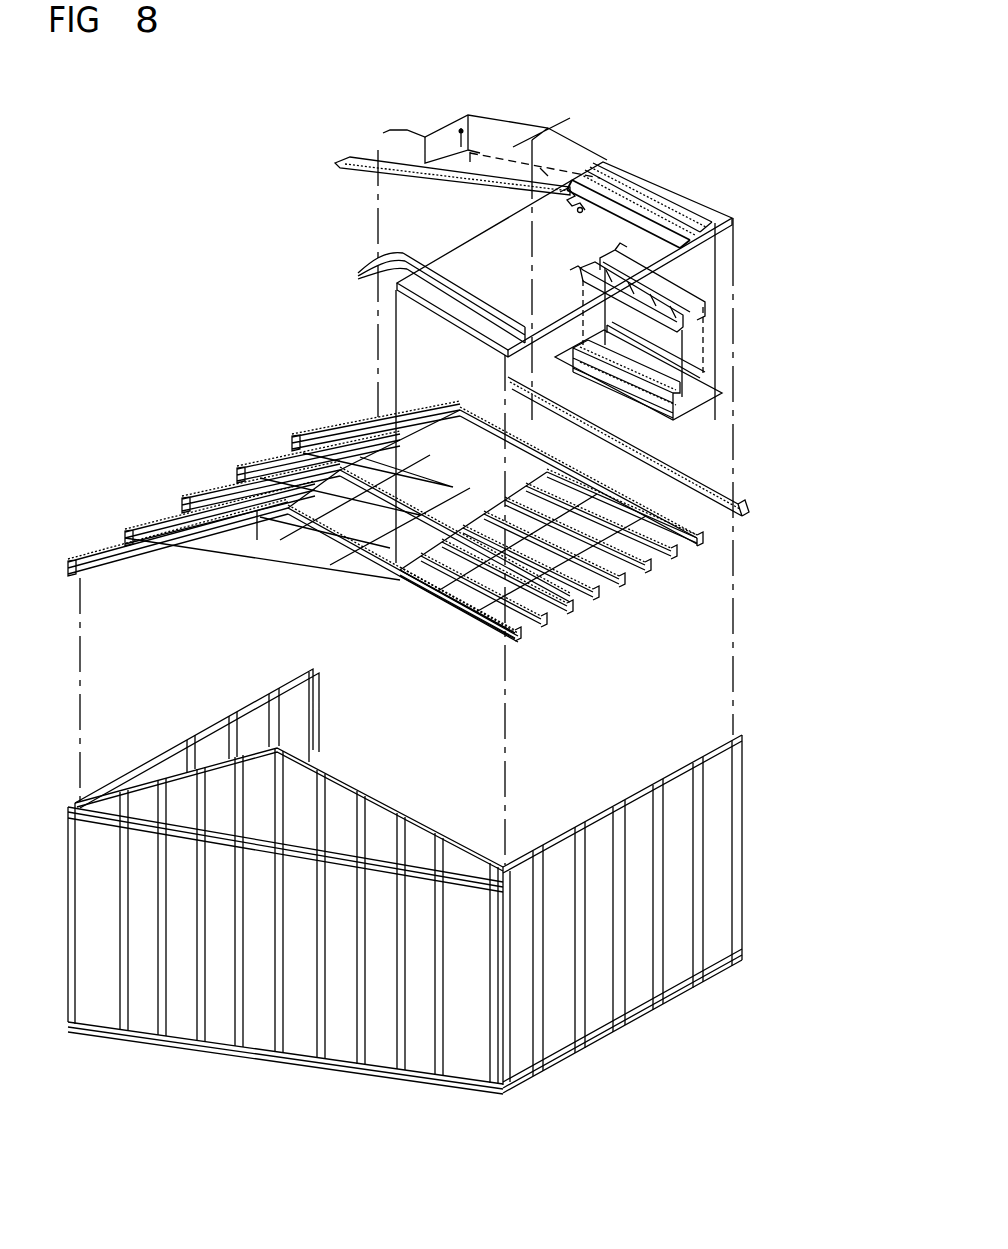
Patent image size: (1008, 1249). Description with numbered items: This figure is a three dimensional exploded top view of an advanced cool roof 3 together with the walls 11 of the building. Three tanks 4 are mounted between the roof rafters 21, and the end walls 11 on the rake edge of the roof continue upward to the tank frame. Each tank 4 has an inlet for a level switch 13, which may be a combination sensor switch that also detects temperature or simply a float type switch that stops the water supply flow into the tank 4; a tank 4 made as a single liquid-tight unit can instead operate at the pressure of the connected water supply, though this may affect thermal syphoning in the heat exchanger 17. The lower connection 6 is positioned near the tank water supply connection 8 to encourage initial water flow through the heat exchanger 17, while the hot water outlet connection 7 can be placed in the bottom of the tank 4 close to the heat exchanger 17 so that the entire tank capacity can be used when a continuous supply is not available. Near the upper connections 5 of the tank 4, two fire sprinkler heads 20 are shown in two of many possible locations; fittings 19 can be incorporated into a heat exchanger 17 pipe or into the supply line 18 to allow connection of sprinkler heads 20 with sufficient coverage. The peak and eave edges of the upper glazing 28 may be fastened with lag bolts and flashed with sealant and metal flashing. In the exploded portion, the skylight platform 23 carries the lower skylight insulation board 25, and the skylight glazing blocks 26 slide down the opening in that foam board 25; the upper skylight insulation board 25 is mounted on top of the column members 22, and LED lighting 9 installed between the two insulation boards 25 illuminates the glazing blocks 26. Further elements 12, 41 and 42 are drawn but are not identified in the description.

The advanced cool roof 3 is at (178, 393).
The tank 4 is at (337, 508).
The upper connections 5 is at (627, 187).
The lower connection 6 is at (470, 163).
The hot water outlet connection 7 is at (547, 177).
The tank water supply connection 8 is at (460, 147).
The LED lighting 9 is at (713, 347).
The walls 11 is at (240, 710).
The ridge panel 12 is at (487, 132).
The level switch 13 is at (460, 127).
The heat exchanger 17 is at (687, 200).
The supply line 18 is at (732, 218).
The fittings 19 is at (667, 167).
The fire sprinkler heads 20 is at (663, 187).
The roof rafters 21 is at (655, 538).
The column members 22 is at (682, 532).
The skylight platform 23 is at (555, 360).
The skylight insulation board 25 is at (710, 387).
The skylight glazing blocks 26 is at (697, 293).
The upper glazing 28 is at (457, 315).
The base plate 41 is at (680, 403).
The flexible strips 42 is at (370, 265).